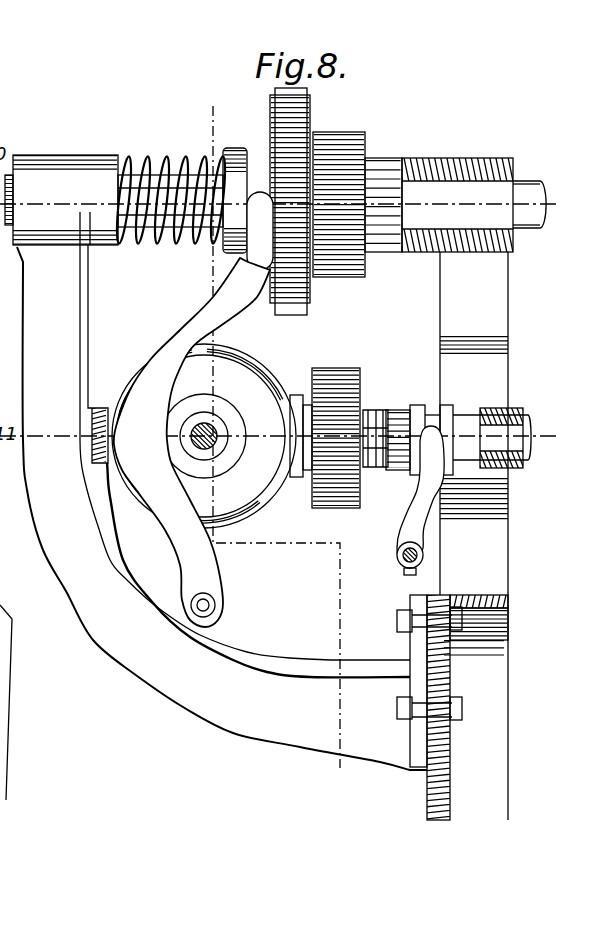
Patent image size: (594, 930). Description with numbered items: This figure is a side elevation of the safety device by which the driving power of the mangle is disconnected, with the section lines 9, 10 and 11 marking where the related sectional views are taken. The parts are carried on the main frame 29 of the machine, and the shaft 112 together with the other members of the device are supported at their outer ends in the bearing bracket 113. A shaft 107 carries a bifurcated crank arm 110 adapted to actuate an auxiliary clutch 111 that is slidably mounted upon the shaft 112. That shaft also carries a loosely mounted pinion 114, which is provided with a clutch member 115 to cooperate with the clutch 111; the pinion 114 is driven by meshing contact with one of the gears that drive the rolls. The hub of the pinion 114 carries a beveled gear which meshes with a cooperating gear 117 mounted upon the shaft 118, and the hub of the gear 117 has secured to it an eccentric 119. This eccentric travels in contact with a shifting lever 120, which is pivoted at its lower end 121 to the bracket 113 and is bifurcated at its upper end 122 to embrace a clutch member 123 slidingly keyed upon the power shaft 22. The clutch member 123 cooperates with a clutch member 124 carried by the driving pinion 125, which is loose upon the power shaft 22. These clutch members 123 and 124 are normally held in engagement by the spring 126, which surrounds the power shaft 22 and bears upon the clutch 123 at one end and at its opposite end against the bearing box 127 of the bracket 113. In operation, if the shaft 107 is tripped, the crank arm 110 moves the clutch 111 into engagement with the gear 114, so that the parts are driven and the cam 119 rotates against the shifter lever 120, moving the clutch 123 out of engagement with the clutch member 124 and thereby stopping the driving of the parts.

The section line 9- 9 is at (273, 437).
The section line 10- 10 is at (546, 207).
The section line 11- 11 is at (532, 443).
The power shaft 22 is at (536, 186).
The main frame 29 is at (498, 530).
The shaft 107 is at (403, 563).
The bifurcated crank arm 110 is at (398, 545).
The auxiliary clutch 111 is at (400, 410).
The shaft 112 is at (525, 420).
The bearing bracket 113 is at (222, 507).
The pinion 114 is at (346, 368).
The clutch member 115 is at (369, 409).
The gear 117 is at (250, 356).
The shaft 118 is at (208, 426).
The eccentric 119 is at (238, 412).
The shifting lever 120 is at (180, 330).
The lower end 121 is at (210, 604).
The upper end 122 is at (250, 254).
The clutch member 123 is at (245, 150).
The clutch member 124 is at (312, 132).
The driving pinion 125 is at (366, 136).
The spring 126 is at (150, 162).
The bearing box 127 is at (61, 200).